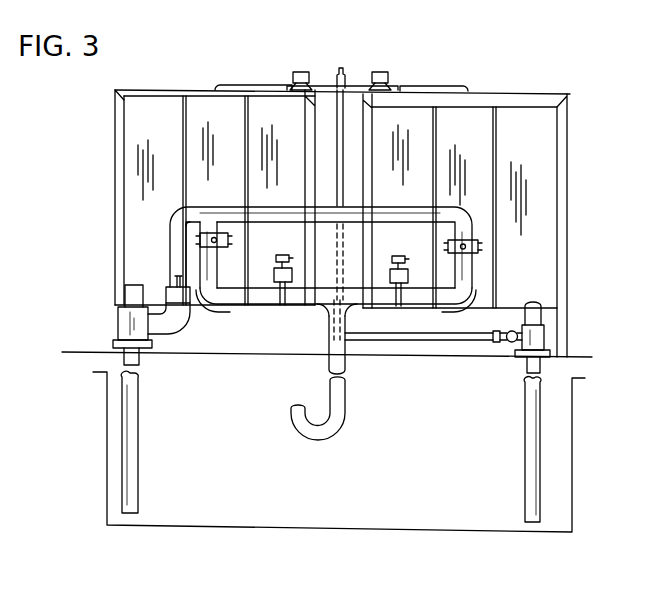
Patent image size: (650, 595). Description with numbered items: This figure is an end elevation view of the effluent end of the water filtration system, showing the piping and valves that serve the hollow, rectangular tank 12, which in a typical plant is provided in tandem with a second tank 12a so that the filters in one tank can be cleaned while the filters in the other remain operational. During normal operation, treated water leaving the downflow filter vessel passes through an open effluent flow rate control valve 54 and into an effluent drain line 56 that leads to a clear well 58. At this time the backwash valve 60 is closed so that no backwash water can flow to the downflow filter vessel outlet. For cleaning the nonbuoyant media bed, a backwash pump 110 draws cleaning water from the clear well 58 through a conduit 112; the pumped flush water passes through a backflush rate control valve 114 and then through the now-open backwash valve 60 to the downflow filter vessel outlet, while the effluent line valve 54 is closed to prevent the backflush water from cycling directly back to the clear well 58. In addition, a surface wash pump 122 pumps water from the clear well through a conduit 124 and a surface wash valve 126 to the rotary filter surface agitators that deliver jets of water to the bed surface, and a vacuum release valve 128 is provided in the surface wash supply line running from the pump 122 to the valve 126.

The tank 12 is at (114, 149).
The tank 12a is at (570, 193).
The effluent flow rate control valve 54 is at (279, 272).
The effluent drain line 56 is at (347, 424).
The clear well 58 is at (356, 524).
The backwash valve 60 is at (215, 232).
The backwash pump 110 is at (118, 324).
The conduit 112 is at (138, 421).
The backflush rate control valve 114 is at (166, 292).
The surface wash pump 122 is at (548, 339).
The conduit 124 is at (524, 438).
The surface wash valve 126 is at (300, 72).
The vacuum release valve 128 is at (344, 76).